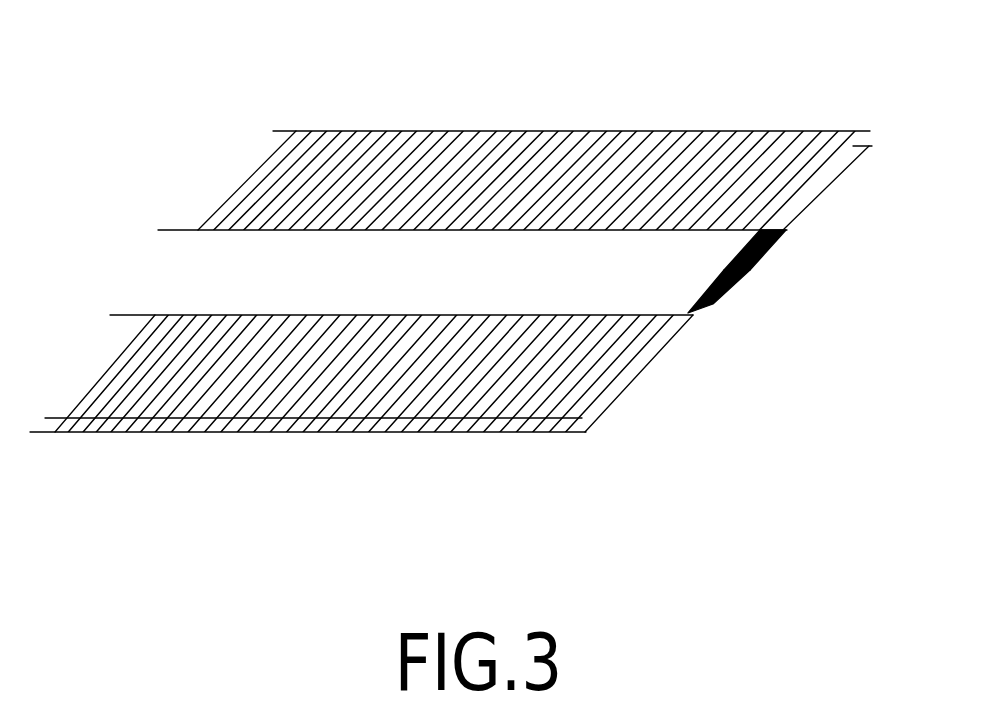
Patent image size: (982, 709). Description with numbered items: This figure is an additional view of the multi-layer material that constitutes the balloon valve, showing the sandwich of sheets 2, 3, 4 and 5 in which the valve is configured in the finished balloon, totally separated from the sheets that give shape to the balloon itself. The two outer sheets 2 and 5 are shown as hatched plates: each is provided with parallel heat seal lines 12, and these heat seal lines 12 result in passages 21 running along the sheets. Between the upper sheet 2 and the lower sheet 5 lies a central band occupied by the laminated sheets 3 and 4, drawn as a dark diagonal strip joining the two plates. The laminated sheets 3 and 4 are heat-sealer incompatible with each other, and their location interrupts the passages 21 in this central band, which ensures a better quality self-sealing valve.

The sheet 2 is at (514, 122).
The heat seal lines 12 is at (602, 145).
The passages 21 is at (712, 132).
The laminated sheet 3 is at (802, 296).
The laminated sheet 4 is at (748, 340).
The sheet 5 is at (842, 195).